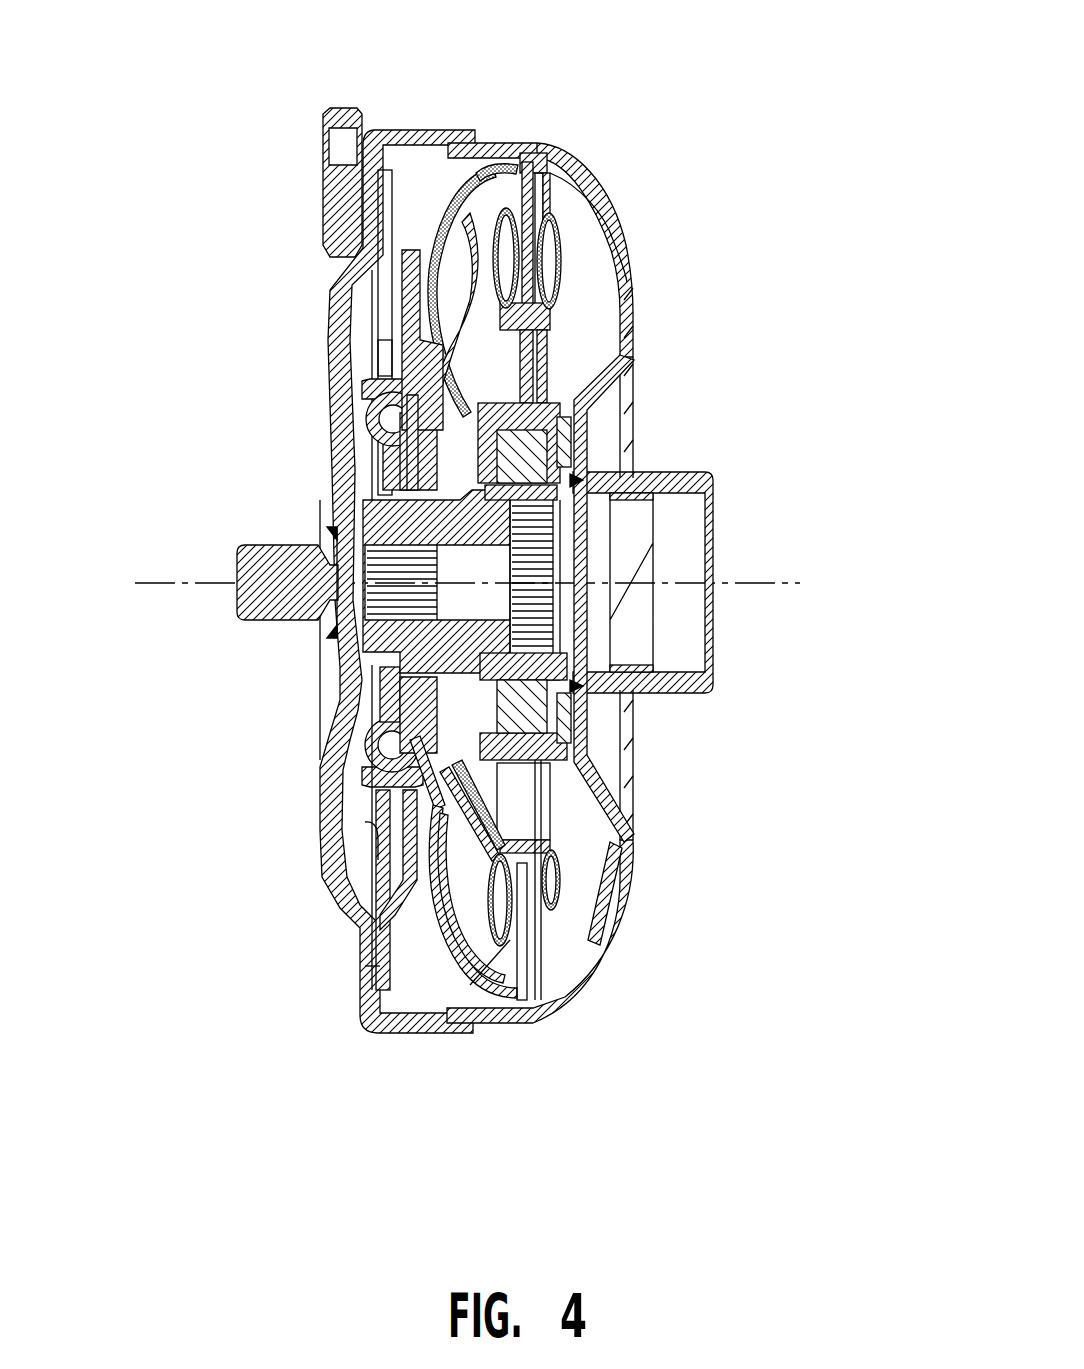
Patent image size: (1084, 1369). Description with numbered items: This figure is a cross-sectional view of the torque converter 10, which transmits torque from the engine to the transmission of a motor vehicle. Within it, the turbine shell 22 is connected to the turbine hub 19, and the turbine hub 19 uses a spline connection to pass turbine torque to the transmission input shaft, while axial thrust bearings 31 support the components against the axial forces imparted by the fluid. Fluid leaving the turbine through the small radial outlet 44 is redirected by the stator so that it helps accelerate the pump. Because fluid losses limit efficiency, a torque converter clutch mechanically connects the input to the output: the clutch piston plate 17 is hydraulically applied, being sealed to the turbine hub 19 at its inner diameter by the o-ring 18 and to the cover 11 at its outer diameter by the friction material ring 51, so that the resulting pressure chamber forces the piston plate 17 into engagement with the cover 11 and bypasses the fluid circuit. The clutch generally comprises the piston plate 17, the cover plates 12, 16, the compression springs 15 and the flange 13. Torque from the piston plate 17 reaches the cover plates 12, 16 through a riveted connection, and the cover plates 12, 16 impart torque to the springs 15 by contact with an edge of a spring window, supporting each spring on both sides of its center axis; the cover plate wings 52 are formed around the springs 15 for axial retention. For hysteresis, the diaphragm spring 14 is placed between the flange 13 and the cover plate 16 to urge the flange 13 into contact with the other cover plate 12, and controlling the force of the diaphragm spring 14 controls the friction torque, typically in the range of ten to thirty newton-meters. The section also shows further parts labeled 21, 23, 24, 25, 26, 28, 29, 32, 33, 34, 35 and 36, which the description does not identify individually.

The torque converter 10 is at (641, 161).
The cover 11 is at (327, 318).
The cover plate 12 is at (378, 367).
The flange 13 is at (405, 830).
The diaphragm spring 14 is at (395, 462).
The compression springs 15 is at (370, 747).
The cover plate 16 is at (398, 378).
The piston plate 17 is at (392, 255).
The o-ring 18 is at (400, 650).
The turbine hub 19 is at (397, 633).
The lower bearing block 21 is at (463, 727).
The turbine shell 22 is at (487, 200).
The diaphragm 23 is at (463, 207).
The spring 24 is at (517, 212).
The cover 25 is at (535, 405).
The seal 26 is at (538, 713).
The sleeve 28 is at (568, 673).
The seal ring 29 is at (575, 475).
The axial thrust bearings 31 is at (615, 458).
The housing cover 32 is at (567, 165).
The louvres 33 is at (583, 237).
The inner ring 34 is at (568, 235).
The hub flange 35 is at (690, 472).
The bore 36 is at (633, 528).
The small radial outlet 44 is at (495, 805).
The friction material ring 51 is at (375, 966).
The cover plate wings 52 is at (365, 822).